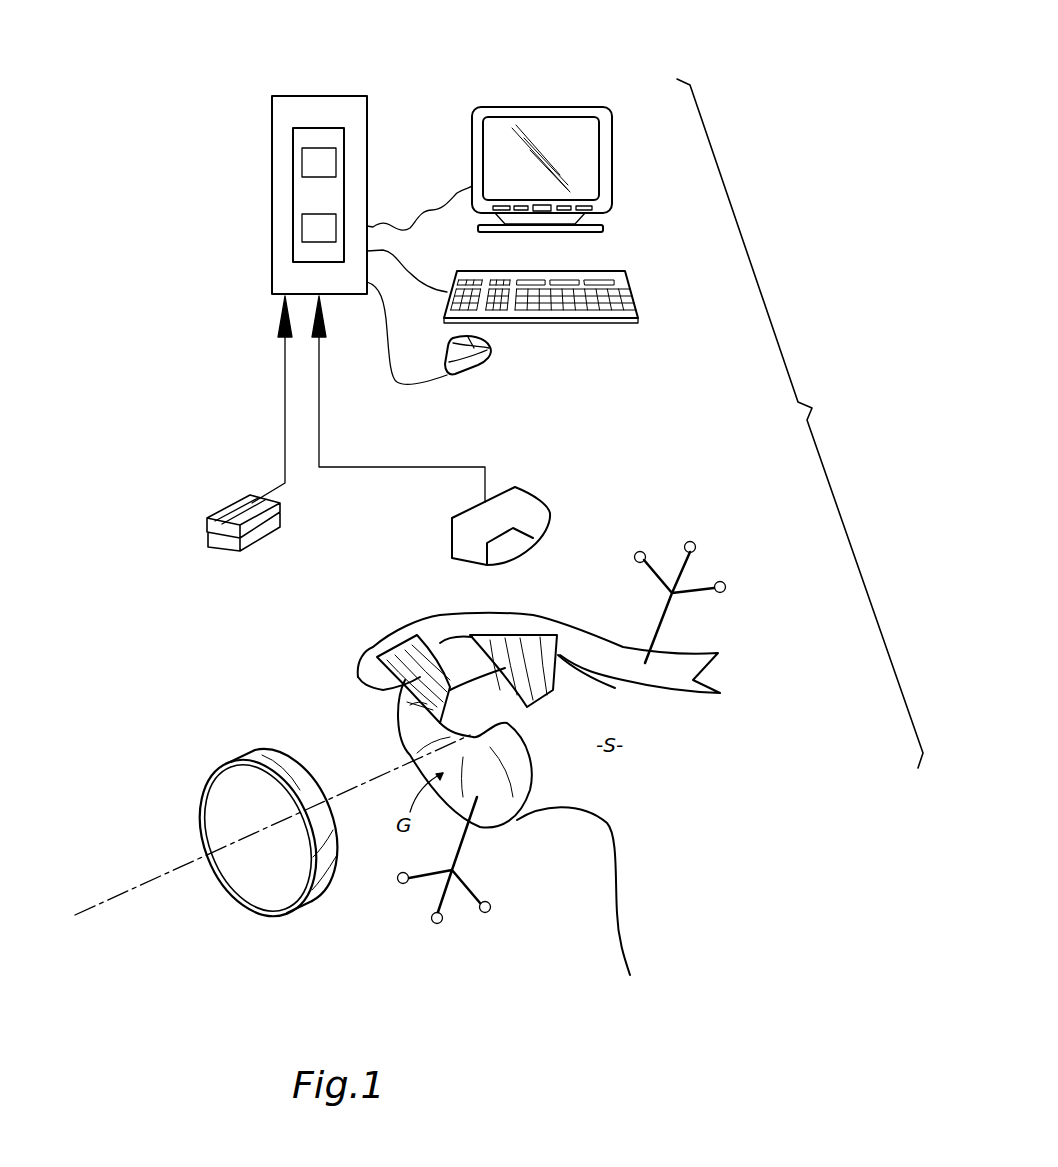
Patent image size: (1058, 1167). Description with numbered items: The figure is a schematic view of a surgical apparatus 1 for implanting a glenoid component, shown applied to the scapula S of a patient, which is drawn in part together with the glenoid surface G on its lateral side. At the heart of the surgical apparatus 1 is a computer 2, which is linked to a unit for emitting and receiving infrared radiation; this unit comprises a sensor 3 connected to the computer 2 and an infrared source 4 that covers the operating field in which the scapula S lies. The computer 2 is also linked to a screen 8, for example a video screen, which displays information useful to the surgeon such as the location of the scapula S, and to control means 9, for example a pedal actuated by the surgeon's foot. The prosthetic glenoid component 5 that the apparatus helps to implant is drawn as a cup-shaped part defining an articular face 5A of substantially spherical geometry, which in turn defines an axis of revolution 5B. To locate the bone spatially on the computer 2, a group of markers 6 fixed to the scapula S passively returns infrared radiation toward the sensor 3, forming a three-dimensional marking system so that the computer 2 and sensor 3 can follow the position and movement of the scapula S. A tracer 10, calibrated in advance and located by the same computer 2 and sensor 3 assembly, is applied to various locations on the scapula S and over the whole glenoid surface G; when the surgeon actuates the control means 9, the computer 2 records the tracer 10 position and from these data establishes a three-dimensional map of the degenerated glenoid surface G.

The surgical apparatus 1 is at (800, 423).
The computer 2 is at (322, 108).
The sensor 3 is at (523, 503).
The infrared source 4 is at (513, 547).
The prosthetic glenoid component 5 is at (253, 747).
The articular face 5A is at (232, 790).
The axis of revolution 5B is at (185, 866).
The group of markers 6 is at (722, 581).
The screen 8 is at (545, 130).
The control means 9 is at (240, 502).
The tracer 10 is at (417, 896).